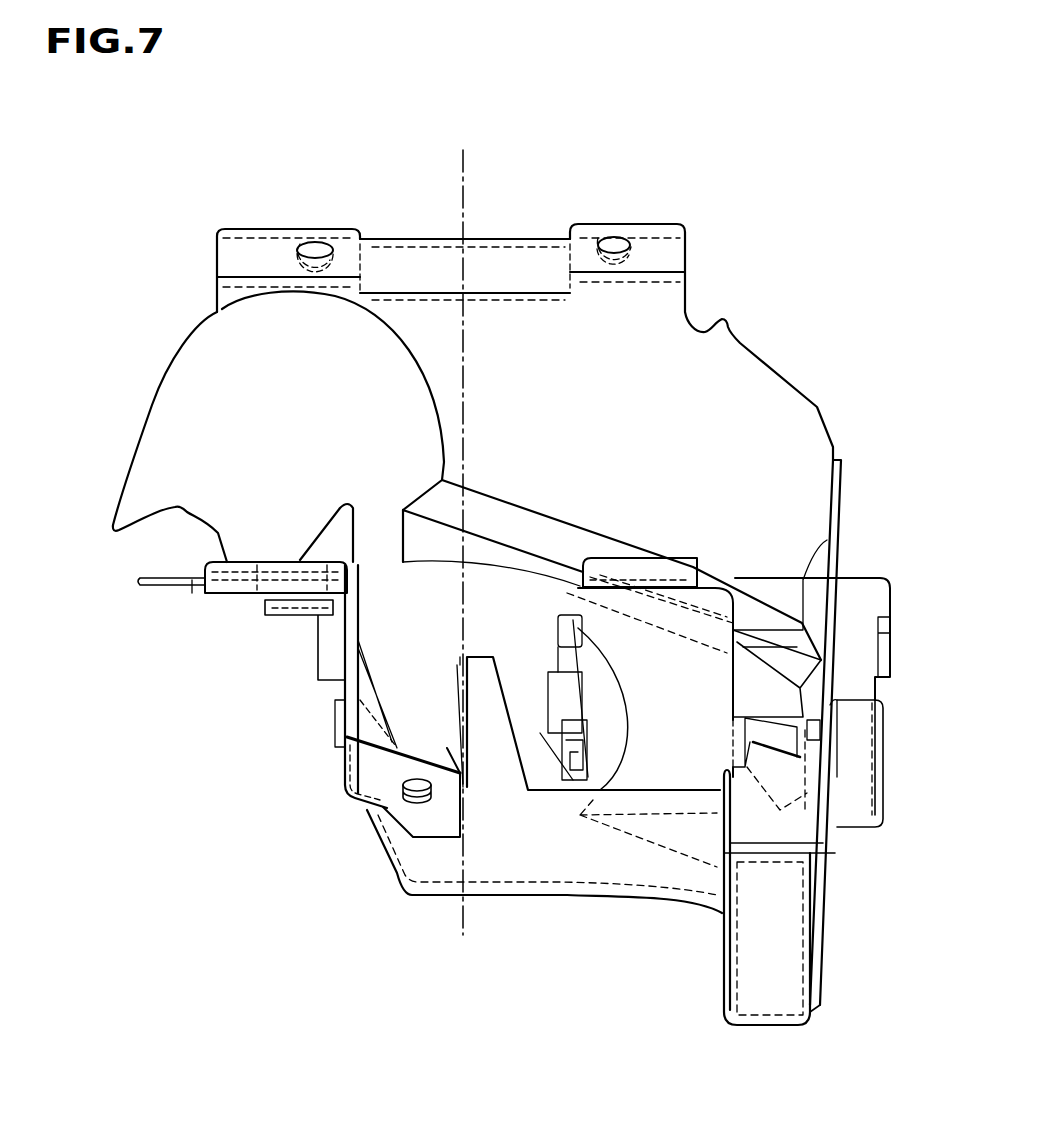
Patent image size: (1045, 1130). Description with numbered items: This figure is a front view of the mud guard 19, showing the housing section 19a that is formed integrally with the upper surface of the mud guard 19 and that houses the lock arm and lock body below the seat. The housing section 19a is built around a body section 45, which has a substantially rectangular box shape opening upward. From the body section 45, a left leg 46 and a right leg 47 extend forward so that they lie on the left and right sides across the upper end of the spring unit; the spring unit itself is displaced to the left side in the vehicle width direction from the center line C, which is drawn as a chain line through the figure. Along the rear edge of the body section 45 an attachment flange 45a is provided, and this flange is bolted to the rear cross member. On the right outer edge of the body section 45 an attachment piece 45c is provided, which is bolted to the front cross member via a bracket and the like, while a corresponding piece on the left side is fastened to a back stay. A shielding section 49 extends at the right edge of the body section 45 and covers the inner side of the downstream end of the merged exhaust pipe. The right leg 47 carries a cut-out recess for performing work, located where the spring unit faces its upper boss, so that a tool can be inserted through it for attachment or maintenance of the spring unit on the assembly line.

The center line C is at (460, 170).
The mud guard 19 is at (781, 299).
The housing section 19a is at (757, 500).
The body section 45 is at (845, 522).
The attachment flange 45a is at (537, 228).
The attachment piece 45c is at (265, 617).
The left leg 46 is at (834, 950).
The right leg 47 is at (341, 778).
The shielding section 49 is at (172, 357).